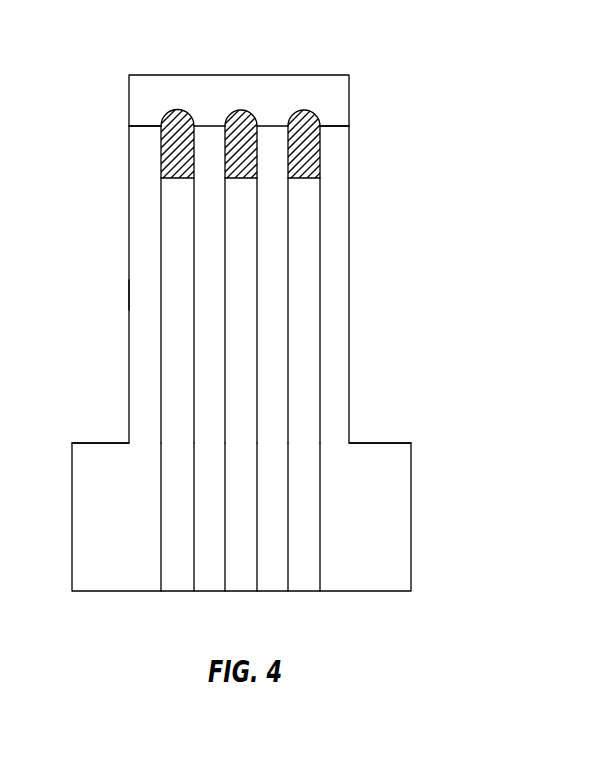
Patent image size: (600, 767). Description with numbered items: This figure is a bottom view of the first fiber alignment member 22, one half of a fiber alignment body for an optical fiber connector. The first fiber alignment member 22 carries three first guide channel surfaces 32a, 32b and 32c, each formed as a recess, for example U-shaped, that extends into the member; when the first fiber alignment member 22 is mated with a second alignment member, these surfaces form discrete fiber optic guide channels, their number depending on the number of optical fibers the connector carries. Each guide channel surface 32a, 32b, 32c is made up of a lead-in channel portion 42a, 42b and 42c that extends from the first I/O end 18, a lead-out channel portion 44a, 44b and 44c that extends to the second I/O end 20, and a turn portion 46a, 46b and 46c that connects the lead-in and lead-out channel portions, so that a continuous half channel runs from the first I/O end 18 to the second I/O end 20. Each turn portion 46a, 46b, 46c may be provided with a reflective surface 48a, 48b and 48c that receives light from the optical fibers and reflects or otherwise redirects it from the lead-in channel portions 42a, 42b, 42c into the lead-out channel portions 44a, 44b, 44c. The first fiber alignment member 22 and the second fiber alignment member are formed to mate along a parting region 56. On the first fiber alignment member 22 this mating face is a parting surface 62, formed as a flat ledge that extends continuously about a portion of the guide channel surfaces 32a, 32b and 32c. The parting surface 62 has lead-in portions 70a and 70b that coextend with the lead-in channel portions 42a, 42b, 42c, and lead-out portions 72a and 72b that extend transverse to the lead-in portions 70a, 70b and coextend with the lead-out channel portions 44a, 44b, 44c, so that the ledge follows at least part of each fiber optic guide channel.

The first I/O end 18 is at (178, 608).
The second I/O end 20 is at (194, 92).
The first fiber alignment member 22 is at (450, 197).
The first guide channel surface 32a is at (175, 332).
The first guide channel surface 32b is at (238, 298).
The first guide channel surface 32c is at (306, 384).
The lead-in channel portion 42a is at (175, 444).
The lead-in channel portion 42b is at (248, 551).
The lead-in channel portion 42c is at (305, 483).
The lead-out channel portion 44a is at (173, 112).
The lead-out channel portion 44b is at (242, 112).
The lead-out channel portion 44c is at (337, 125).
The turn portion 46a is at (172, 163).
The turn portion 46b is at (237, 166).
The turn portion 46c is at (310, 150).
The reflective surface 48a is at (190, 143).
The reflective surface 48b is at (248, 140).
The reflective surface 48c is at (313, 165).
The parting region 56 is at (350, 305).
The parting surface 62 is at (140, 298).
The lead-in portion 70a is at (142, 385).
The lead-in portion 70b is at (332, 413).
The lead-out portion 72a is at (145, 125).
The lead-out portion 72b is at (335, 124).